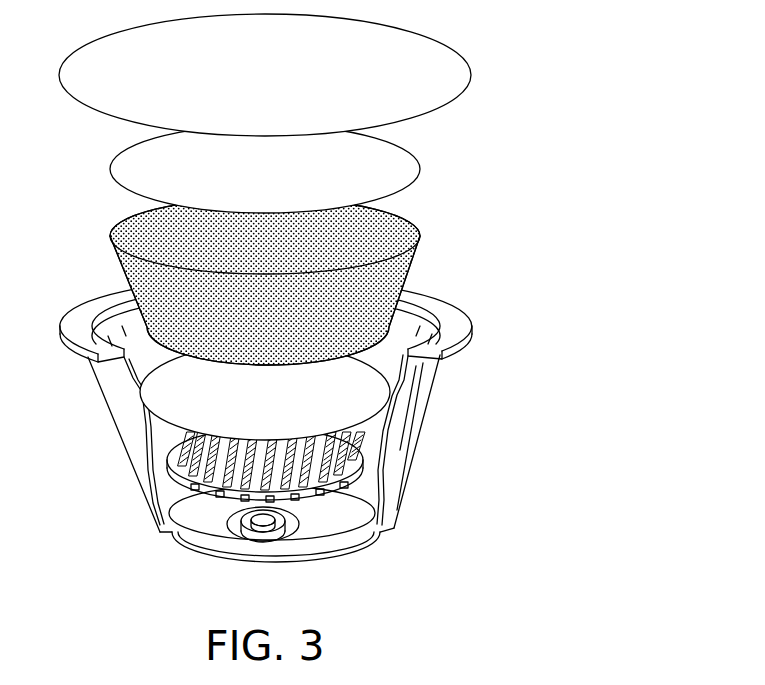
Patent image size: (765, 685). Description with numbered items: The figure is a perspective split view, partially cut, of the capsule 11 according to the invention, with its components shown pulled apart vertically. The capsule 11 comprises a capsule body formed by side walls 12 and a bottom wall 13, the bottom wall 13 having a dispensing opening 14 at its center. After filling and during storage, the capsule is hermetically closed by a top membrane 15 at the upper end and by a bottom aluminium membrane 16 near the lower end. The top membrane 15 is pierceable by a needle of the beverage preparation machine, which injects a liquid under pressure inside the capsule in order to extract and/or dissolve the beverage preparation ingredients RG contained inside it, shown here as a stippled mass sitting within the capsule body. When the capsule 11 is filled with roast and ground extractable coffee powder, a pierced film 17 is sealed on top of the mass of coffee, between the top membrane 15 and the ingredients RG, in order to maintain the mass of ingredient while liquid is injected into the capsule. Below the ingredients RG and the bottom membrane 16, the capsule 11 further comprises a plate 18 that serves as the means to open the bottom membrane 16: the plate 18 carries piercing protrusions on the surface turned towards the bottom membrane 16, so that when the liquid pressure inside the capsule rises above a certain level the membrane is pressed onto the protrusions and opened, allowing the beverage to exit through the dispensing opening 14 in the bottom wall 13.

The capsule 11 is at (303, 303).
The side walls 12 is at (417, 447).
The bottom wall 13 is at (192, 547).
The dispensing opening 14 is at (258, 530).
The top membrane 15 is at (437, 53).
The bottom aluminium membrane 16 is at (160, 393).
The pierced film 17 is at (121, 163).
The plate 18 is at (172, 460).
The beverage preparation ingredients RG is at (420, 210).